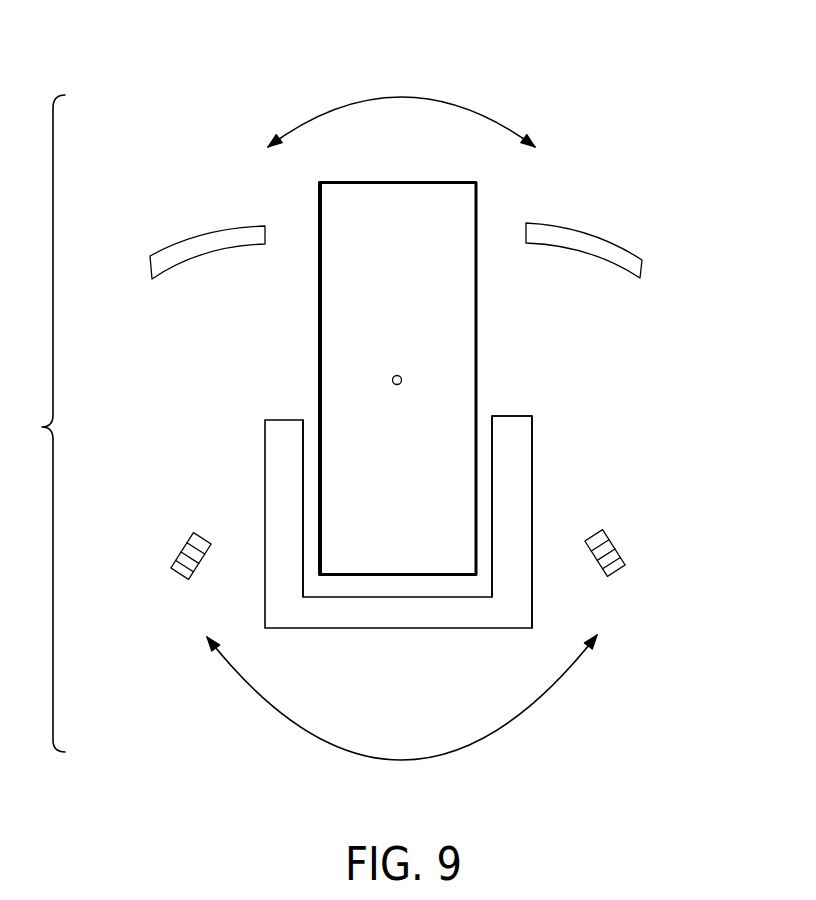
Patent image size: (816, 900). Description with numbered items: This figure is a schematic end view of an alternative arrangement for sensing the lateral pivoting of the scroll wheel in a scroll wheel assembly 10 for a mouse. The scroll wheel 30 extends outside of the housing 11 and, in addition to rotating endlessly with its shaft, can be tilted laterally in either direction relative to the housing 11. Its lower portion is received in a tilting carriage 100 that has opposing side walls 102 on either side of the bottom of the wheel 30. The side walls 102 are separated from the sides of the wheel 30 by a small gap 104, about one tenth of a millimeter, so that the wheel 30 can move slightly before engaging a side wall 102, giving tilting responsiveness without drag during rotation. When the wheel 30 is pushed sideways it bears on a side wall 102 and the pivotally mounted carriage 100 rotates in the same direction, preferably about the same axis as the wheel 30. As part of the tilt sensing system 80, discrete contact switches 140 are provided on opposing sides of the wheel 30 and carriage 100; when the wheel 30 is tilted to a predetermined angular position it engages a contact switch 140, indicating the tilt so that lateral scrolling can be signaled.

The scroll wheel assembly 10 is at (183, 100).
The housing 11 is at (208, 226).
The scroll wheel 30 is at (326, 207).
The tilt sensing system 80 is at (175, 640).
The tilting carriage 100 is at (265, 512).
The side wall 102 is at (533, 455).
The gap 104 is at (308, 416).
The contact switch 140 is at (170, 548).